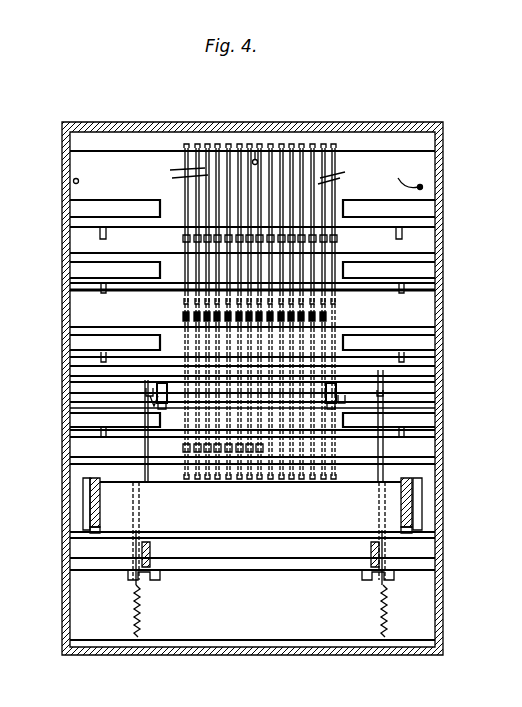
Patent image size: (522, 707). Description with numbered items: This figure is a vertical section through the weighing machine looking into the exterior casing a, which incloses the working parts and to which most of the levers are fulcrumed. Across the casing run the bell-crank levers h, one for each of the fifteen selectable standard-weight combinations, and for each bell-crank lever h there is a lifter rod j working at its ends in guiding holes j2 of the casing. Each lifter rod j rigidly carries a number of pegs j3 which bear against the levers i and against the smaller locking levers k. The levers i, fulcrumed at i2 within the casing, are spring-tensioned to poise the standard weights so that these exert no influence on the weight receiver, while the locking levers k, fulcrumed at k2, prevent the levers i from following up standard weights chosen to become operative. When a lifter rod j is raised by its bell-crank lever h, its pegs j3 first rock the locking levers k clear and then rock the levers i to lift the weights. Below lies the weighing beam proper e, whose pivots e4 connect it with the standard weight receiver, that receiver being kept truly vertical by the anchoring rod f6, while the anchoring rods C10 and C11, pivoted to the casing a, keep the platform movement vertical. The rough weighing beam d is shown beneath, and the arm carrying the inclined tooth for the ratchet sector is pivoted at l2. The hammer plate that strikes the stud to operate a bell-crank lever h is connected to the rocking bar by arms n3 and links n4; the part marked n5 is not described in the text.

The exterior casing a is at (354, 133).
The anchoring rod f6 is at (255, 148).
The guiding holes j2 is at (296, 146).
The pegs j3 is at (183, 238).
The lifter rod j is at (246, 173).
The bell-crank lever h is at (183, 316).
The anchoring rod C10 is at (91, 169).
The anchoring rod C11 is at (396, 172).
The fulcrum of locking lever k2 is at (70, 199).
The fulcrum of lever i2 is at (64, 227).
The lever i is at (122, 296).
The locking lever k is at (252, 336).
The pivot of arm l2 is at (78, 393).
The arms n3 is at (146, 396).
The links n4 is at (326, 400).
The block n5 is at (248, 400).
The weighing beam proper e is at (108, 492).
The pivots for connection with the weight receiver e4 is at (83, 510).
The rough weighing beam d is at (150, 552).